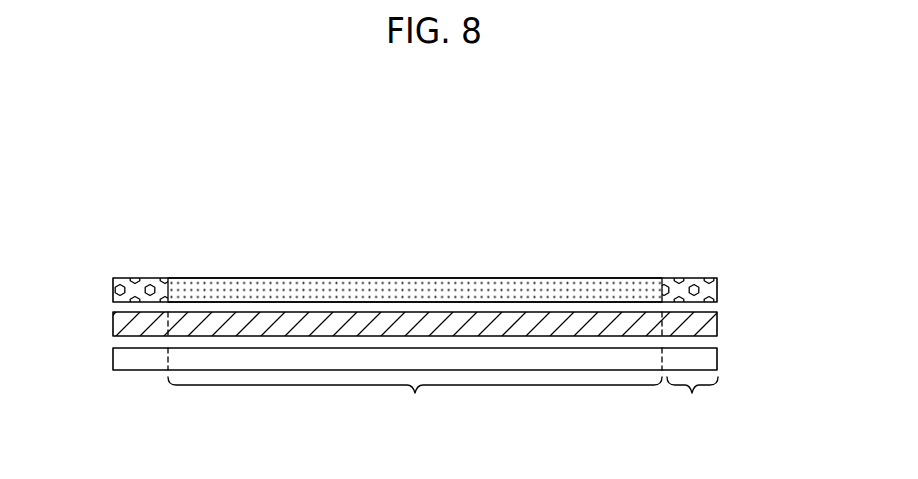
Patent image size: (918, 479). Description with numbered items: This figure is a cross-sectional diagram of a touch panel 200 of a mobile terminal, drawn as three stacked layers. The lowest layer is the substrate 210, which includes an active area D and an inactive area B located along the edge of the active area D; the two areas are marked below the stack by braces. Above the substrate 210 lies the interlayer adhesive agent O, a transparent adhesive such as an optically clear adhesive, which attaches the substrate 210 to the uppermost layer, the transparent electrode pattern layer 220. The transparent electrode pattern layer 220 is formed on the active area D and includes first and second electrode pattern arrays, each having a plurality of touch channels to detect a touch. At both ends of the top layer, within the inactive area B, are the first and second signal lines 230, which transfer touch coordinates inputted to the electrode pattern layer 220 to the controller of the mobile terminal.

The touch panel 200 is at (633, 184).
The substrate 210 is at (718, 357).
The transparent electrode pattern layer 220 is at (417, 278).
The first and second signal lines 230 is at (113, 291).
The interlayer adhesive agent O is at (718, 323).
The active area D is at (415, 400).
The inactive area B is at (692, 400).